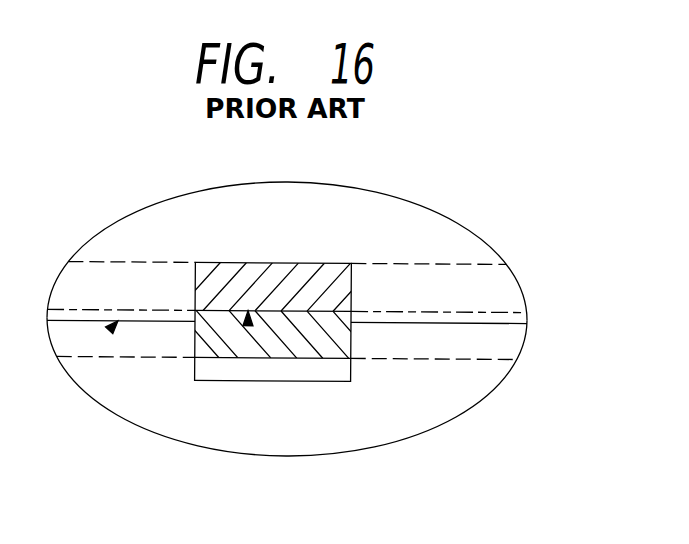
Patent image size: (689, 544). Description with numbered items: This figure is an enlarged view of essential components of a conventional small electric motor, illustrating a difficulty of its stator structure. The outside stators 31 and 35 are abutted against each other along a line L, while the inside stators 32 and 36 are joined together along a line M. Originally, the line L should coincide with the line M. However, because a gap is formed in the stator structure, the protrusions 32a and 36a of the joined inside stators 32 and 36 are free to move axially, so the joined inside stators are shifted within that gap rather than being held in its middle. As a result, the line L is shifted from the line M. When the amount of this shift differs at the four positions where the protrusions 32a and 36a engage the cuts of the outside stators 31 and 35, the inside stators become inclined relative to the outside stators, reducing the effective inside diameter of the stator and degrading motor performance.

The outside stator 31 is at (407, 225).
The inside stator 32 is at (481, 295).
The protrusion 32a is at (309, 273).
The inside stator 36 is at (481, 340).
The protrusion 36a is at (316, 344).
The outside stator 35 is at (447, 392).
The line L is at (109, 331).
The line M is at (248, 326).